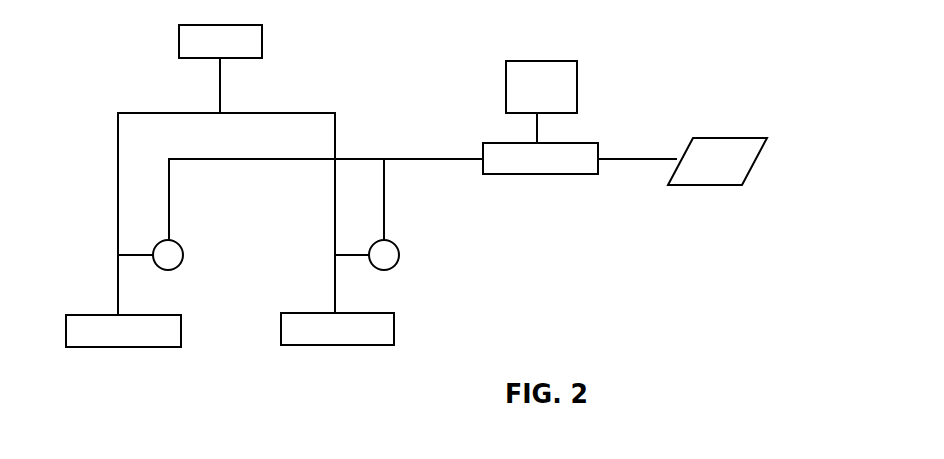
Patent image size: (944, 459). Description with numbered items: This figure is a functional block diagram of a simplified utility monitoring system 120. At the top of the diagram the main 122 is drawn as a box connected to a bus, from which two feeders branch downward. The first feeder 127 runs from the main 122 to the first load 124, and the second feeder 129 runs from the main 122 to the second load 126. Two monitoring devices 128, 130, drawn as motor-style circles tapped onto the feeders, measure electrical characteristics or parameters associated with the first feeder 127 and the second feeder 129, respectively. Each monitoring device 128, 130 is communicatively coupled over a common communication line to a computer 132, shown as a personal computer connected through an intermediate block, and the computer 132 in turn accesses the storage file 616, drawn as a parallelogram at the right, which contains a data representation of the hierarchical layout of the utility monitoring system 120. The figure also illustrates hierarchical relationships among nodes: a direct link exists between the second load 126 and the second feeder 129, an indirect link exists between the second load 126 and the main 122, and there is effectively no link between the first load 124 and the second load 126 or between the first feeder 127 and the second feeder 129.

The utility monitoring system 120 is at (683, 75).
The main 122 is at (178, 42).
The first load 124 is at (127, 348).
The second load 126 is at (347, 346).
The first feeder 127 is at (117, 157).
The monitoring device 128 is at (172, 270).
The second feeder 129 is at (336, 297).
The monitoring device 130 is at (387, 270).
The computer 132 is at (505, 92).
The storage file 616 is at (738, 172).